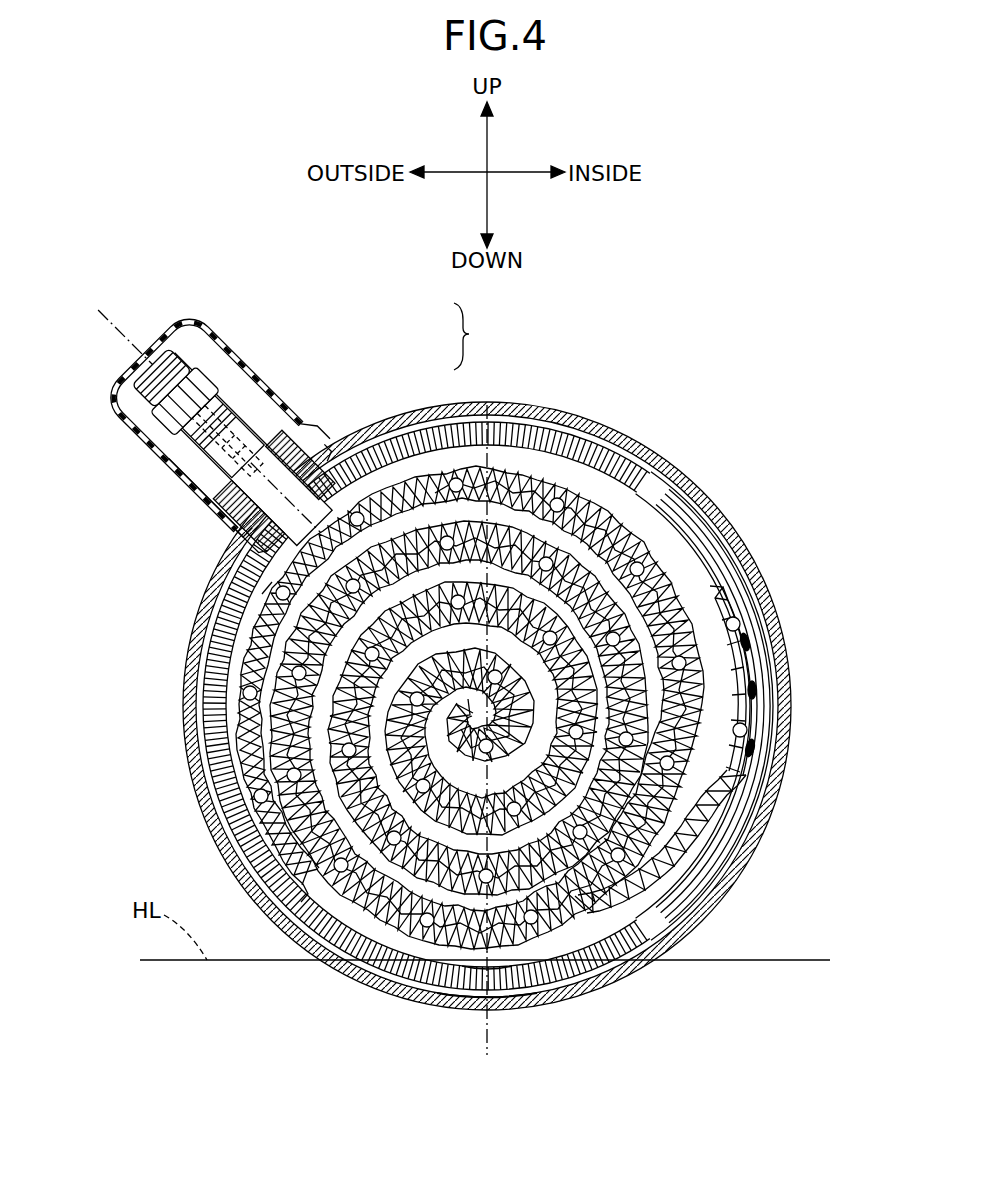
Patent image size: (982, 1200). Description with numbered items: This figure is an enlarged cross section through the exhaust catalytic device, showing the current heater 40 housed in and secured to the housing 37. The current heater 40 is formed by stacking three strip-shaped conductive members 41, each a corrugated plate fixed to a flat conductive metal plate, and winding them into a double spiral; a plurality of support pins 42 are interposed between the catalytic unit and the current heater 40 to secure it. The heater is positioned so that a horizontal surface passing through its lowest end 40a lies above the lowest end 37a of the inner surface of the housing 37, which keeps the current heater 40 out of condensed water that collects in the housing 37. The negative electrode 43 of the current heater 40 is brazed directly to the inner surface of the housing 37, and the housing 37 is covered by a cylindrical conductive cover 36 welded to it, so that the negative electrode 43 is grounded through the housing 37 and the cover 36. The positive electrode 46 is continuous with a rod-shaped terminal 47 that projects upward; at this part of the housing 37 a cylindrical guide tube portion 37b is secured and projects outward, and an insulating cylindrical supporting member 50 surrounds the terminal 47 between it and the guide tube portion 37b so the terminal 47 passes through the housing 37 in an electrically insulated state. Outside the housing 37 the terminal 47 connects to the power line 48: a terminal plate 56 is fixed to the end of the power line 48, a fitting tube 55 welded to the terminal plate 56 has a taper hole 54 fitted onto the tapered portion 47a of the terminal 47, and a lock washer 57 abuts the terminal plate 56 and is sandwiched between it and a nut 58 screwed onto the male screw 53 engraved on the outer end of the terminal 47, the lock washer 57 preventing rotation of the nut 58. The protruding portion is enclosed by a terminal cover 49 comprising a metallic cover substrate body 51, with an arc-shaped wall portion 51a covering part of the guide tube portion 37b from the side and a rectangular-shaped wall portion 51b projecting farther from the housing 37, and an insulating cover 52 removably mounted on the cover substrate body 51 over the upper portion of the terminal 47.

The cover 36 is at (198, 739).
The housing 37 is at (658, 470).
The lowest end of inner surface of housing 37a is at (468, 979).
The guide tube portion 37b is at (312, 441).
The current heater 40 is at (700, 571).
The lowest end of current heater 40a is at (490, 963).
The conductive member 41 is at (592, 520).
The support pin 42 is at (584, 796).
The negative electrode 43 is at (757, 718).
The positive electrode 46 is at (268, 582).
The terminal 47 is at (270, 412).
The tapered portion 47a is at (240, 408).
The power line 48 is at (228, 395).
The terminal cover 49 is at (481, 336).
The supporting member 50 is at (232, 519).
The cover substrate body 51 is at (345, 412).
The arc-shaped wall portion 51a is at (240, 505).
The rectangular-shaped wall portion 51b is at (178, 492).
The insulating cover 52 is at (297, 407).
The male screw 53 is at (172, 352).
The taper hole 54 is at (286, 400).
The fitting tube 55 is at (205, 438).
The terminal plate 56 is at (160, 422).
The lock washer 57 is at (232, 352).
The nut 58 is at (160, 393).